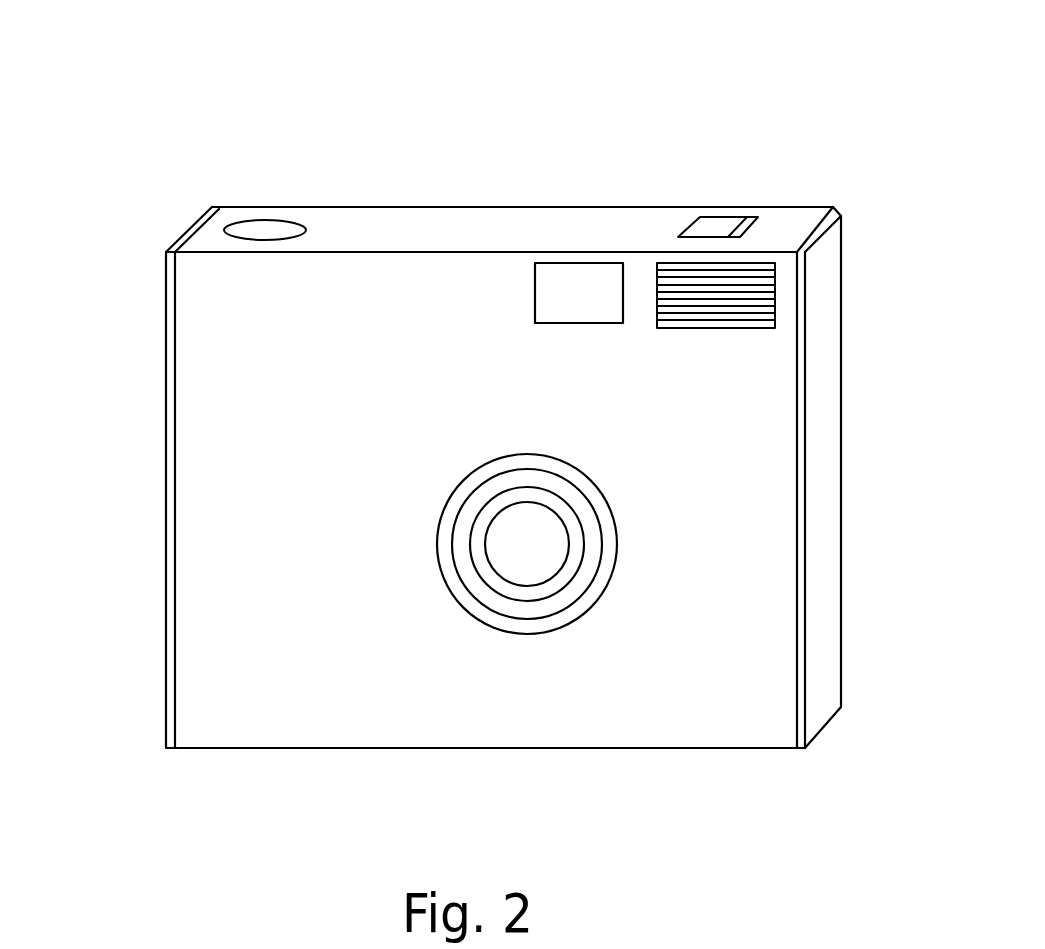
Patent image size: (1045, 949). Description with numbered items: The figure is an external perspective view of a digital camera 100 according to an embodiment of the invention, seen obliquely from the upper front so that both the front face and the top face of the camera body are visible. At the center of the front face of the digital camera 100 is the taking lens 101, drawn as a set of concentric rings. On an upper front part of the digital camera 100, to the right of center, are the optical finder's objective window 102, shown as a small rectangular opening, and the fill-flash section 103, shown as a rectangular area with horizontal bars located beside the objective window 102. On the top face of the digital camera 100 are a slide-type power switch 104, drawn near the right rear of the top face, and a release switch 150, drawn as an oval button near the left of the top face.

The digital camera 100 is at (128, 125).
The taking lens 101 is at (527, 543).
The optical finder's objective window 102 is at (570, 287).
The fill-flash section 103 is at (678, 283).
The slide-type power switch 104 is at (708, 226).
The release switch 150 is at (260, 230).